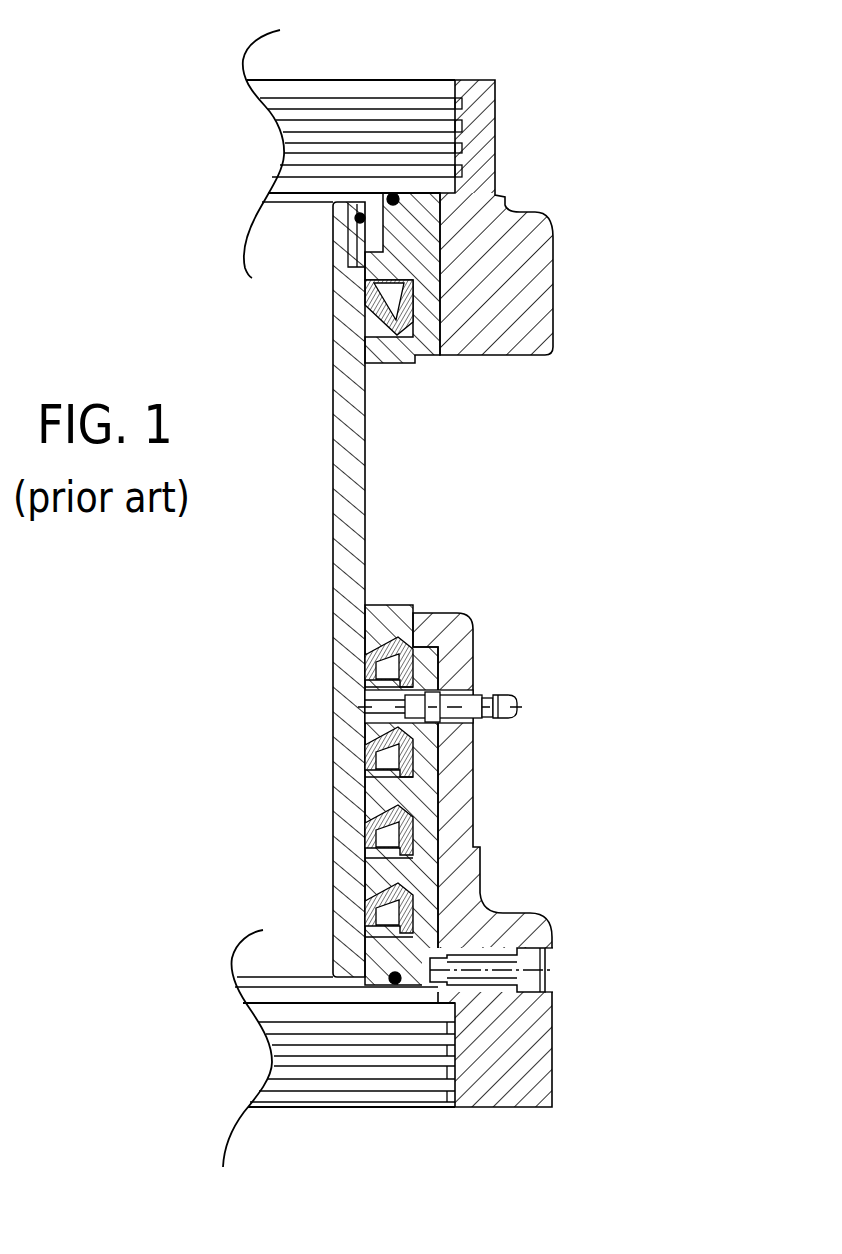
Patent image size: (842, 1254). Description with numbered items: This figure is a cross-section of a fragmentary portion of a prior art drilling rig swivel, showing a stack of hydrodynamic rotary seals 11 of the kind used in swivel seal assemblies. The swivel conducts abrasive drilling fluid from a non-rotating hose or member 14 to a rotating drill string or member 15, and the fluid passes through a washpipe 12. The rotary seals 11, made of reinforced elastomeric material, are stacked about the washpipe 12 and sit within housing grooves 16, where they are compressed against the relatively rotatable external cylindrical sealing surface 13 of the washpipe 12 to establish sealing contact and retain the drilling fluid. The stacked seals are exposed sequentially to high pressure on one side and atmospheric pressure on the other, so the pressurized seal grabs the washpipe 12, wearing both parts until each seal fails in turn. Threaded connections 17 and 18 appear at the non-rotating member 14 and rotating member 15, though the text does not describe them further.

The rotary seals 11 is at (420, 642).
The washpipe 12 is at (345, 663).
The external cylindrical sealing surface 13 is at (367, 528).
The non-rotating hose or member 14 is at (478, 213).
The rotating drill string or member 15 is at (525, 1028).
The housing grooves 16 is at (413, 786).
The upper thread 17 is at (367, 103).
The lower thread 18 is at (352, 1068).